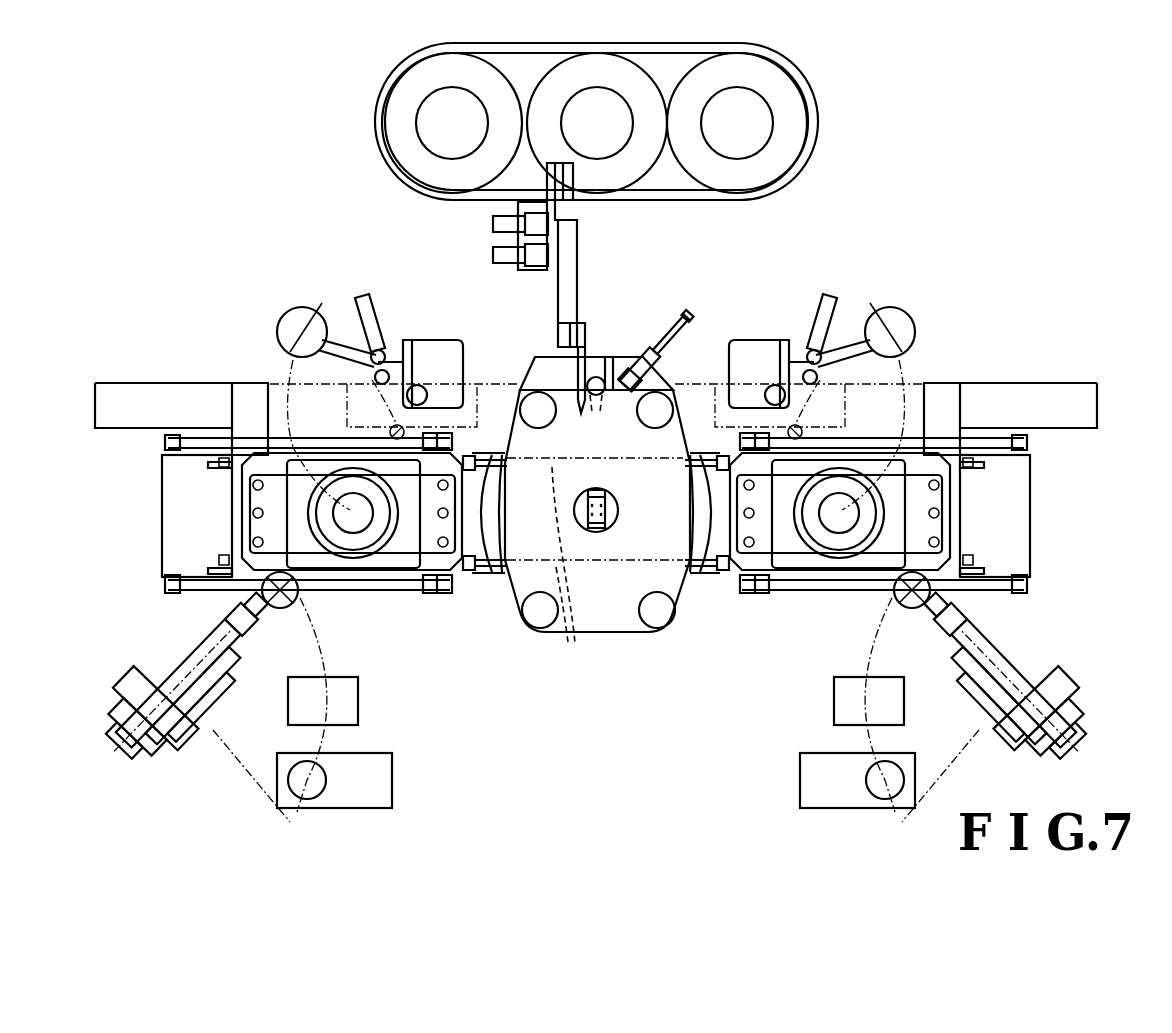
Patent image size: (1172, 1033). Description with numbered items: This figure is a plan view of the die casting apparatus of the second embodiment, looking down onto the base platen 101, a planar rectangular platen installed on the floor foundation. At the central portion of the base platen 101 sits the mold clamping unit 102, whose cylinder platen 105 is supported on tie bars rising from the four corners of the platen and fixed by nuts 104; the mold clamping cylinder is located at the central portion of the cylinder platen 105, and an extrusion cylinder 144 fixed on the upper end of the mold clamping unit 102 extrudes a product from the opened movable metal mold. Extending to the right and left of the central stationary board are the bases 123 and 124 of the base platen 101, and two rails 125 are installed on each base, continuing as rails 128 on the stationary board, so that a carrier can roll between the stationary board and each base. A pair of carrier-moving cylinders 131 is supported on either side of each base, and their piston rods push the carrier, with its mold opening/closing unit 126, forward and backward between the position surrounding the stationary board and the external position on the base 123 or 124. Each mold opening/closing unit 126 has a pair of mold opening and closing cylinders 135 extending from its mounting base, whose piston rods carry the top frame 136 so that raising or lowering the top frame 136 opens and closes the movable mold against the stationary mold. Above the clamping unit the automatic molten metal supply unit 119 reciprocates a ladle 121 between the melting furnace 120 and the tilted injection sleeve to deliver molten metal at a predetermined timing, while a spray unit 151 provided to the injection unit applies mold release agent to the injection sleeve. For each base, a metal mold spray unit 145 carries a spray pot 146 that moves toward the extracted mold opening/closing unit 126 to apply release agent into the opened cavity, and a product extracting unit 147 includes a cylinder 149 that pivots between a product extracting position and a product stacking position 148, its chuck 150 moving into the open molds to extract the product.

The base platen 101 is at (508, 608).
The mold clamping unit 102 is at (527, 638).
The nuts 104 is at (665, 618).
The cylinder platen 105 is at (640, 634).
The automatic molten metal supply unit 119 is at (598, 251).
The melting furnace 120 is at (650, 172).
The ladle 121 is at (597, 377).
The base 123 is at (1020, 458).
The base 124 is at (175, 470).
The rails 125 is at (483, 568).
The mold opening/closing unit 126 is at (238, 510).
The rails 128 is at (575, 633).
The carrier-moving cylinders 131 is at (213, 437).
The mold opening and closing cylinders 135 is at (263, 510).
The top frame 136 is at (247, 530).
The extrusion cylinder 144 is at (598, 532).
The metal mold spray units 145 is at (395, 322).
The spray pot 146 is at (293, 313).
The product extracting units 147 is at (168, 638).
The product stacking position 148 is at (393, 778).
The cylinder 149 is at (227, 680).
The chuck 150 is at (300, 600).
The spray unit 151 is at (662, 347).